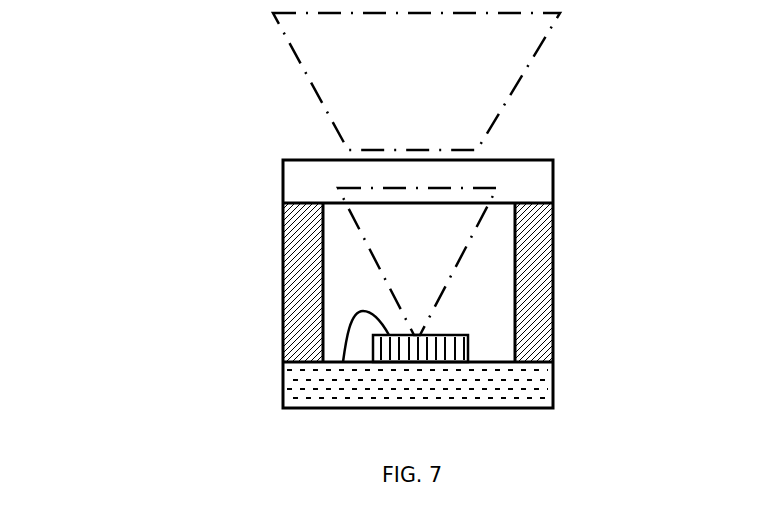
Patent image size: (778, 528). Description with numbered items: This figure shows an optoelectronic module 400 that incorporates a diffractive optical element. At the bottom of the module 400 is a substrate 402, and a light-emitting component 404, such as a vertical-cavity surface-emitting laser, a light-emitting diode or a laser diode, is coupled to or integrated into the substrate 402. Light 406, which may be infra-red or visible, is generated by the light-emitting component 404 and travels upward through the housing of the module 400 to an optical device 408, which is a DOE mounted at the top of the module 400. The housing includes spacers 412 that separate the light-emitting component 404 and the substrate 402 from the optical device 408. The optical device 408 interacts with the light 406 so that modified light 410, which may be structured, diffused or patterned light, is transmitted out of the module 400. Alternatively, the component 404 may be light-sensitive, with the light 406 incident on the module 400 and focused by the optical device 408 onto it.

The module 400 is at (125, 159).
The substrate 402 is at (556, 385).
The light-emitting component 404 is at (371, 350).
The light 406 is at (462, 266).
The optical device 408 is at (556, 180).
The modified light 410 is at (309, 82).
The spacers 412 is at (283, 243).